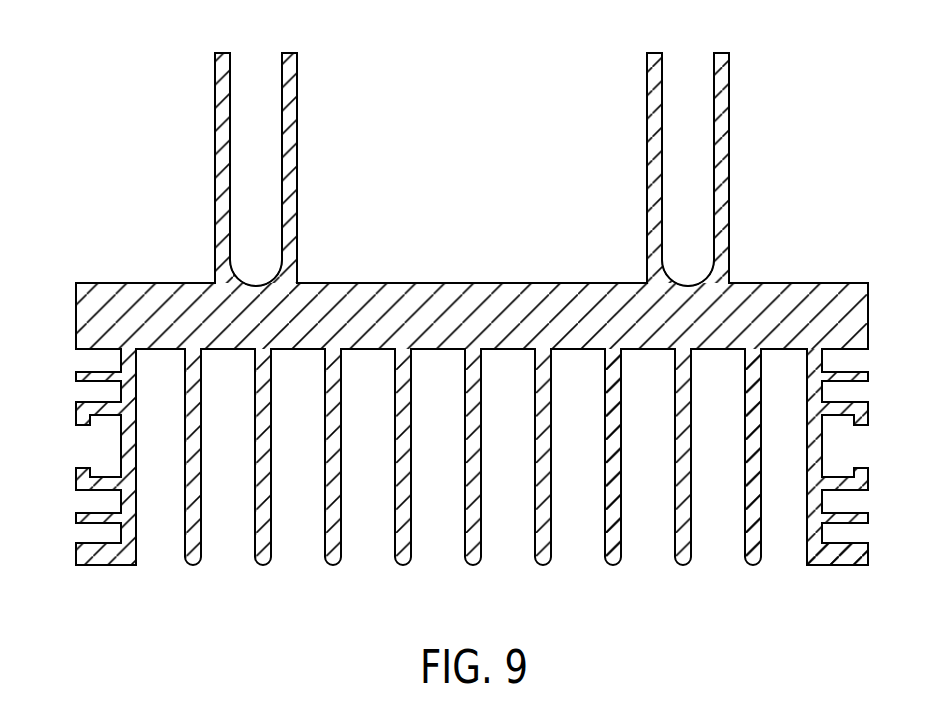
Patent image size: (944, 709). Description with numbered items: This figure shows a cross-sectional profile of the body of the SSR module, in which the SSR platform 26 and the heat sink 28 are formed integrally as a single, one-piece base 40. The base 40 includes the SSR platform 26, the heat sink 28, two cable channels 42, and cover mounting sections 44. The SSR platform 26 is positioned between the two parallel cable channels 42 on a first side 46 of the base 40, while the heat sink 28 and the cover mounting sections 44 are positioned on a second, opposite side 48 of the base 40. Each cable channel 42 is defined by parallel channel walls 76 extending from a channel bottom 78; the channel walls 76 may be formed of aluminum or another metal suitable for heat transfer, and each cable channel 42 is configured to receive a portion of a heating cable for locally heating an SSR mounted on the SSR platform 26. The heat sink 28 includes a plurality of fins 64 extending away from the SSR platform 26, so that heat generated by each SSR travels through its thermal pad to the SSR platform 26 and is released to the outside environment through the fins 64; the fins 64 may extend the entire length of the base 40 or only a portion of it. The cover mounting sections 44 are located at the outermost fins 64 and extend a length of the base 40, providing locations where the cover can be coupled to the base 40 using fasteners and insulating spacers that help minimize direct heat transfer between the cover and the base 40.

The base 40 is at (130, 73).
The SSR platform 26 is at (480, 283).
The heat sink 28 is at (226, 550).
The cable channel 42 is at (471, 152).
The cover mounting section 44 is at (80, 443).
The first side 46 is at (826, 214).
The second side 48 is at (861, 585).
The fin 64 is at (612, 565).
The channel wall 76 is at (215, 146).
The channel bottom 78 is at (258, 283).